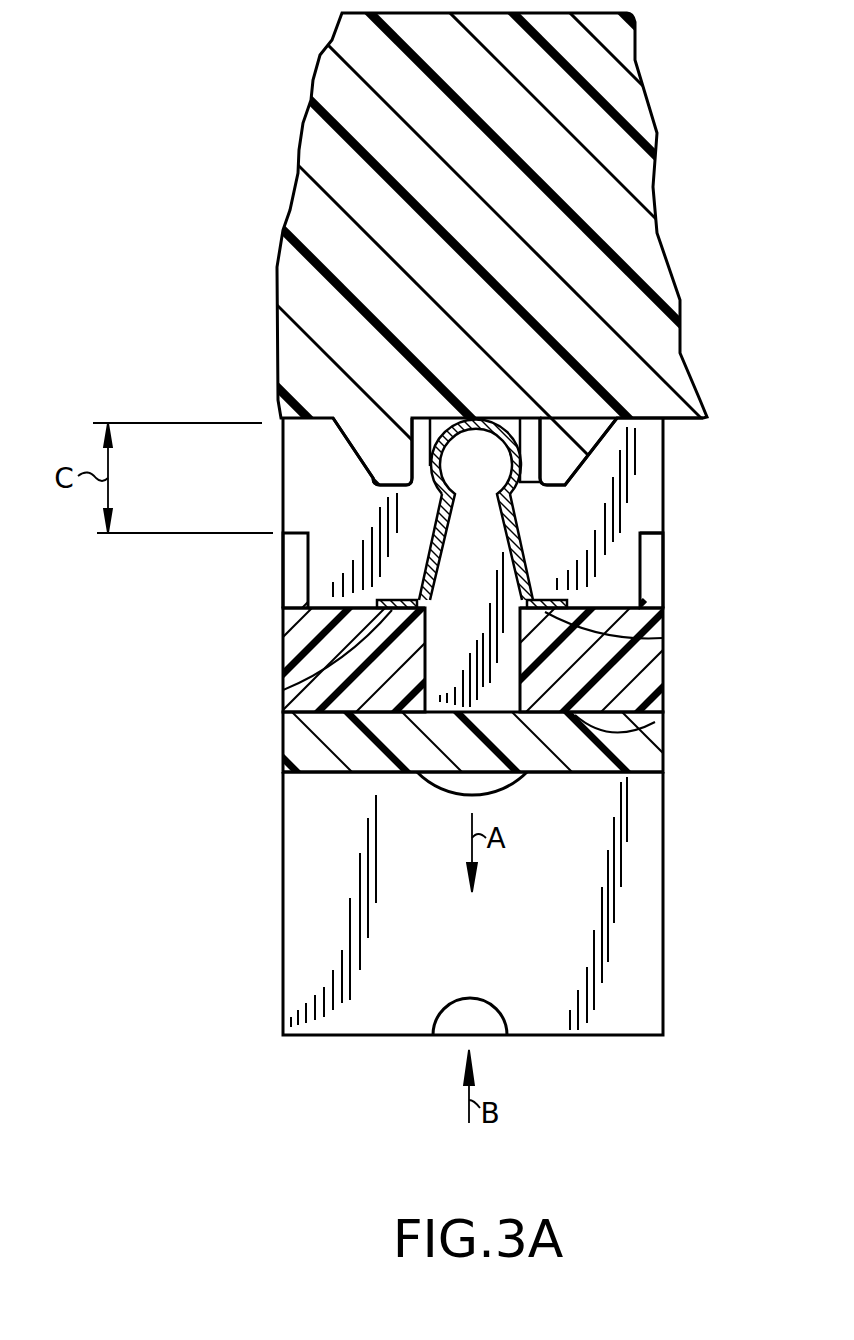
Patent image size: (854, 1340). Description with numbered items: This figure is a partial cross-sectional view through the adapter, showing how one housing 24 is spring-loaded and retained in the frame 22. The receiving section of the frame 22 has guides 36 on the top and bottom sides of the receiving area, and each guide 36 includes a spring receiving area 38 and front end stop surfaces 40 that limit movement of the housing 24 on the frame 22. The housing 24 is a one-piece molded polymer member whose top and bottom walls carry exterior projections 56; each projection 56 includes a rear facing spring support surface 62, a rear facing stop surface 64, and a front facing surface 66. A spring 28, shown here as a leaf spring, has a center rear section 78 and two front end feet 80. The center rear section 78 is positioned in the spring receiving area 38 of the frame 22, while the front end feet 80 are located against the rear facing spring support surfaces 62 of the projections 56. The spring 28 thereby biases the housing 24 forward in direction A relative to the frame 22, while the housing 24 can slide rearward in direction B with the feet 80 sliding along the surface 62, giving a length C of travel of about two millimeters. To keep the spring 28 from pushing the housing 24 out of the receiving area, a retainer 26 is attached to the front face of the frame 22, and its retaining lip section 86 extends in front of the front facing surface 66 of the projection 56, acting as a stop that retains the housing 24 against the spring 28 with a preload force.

The frame 22 is at (683, 350).
The housing 24 is at (663, 950).
The retainer 26 is at (642, 753).
The spring 28 is at (600, 507).
The guide 36 is at (590, 433).
The spring receiving area 38 is at (452, 462).
The front end stop surface 40 is at (398, 485).
The projection 56 is at (295, 643).
The rear facing spring support surface 62 is at (290, 578).
The rear facing stop surface 64 is at (656, 530).
The front facing surface 66 is at (663, 727).
The center rear section 78 is at (430, 417).
The front end foot 80 is at (320, 684).
The retaining lip section 86 is at (305, 740).